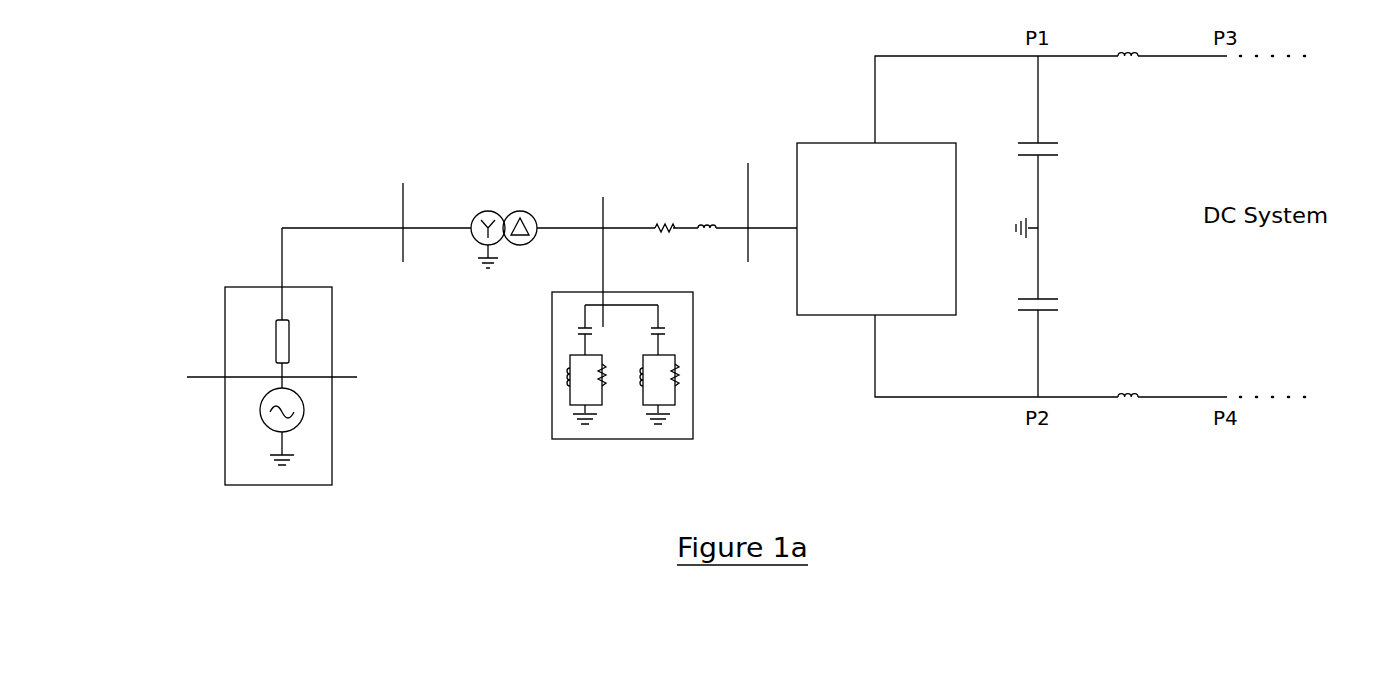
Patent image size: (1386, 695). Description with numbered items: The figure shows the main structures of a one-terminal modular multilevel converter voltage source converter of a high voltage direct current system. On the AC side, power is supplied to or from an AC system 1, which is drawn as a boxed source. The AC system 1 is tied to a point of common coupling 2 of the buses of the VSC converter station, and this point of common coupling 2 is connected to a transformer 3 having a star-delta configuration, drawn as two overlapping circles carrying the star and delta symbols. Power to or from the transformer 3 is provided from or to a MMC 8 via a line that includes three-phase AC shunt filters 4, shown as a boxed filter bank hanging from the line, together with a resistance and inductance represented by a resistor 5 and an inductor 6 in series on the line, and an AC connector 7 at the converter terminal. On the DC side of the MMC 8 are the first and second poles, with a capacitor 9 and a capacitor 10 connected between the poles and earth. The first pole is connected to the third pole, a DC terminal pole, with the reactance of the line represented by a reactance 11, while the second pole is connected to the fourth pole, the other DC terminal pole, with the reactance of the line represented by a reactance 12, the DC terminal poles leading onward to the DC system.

The AC system 1 is at (255, 277).
The point of common coupling 2 is at (402, 172).
The transformer 3 is at (503, 195).
The three-phase AC shunt filters 4 is at (557, 453).
The resistor 5 is at (664, 190).
The inductor 6 is at (700, 187).
The AC connector 7 is at (747, 165).
The MMC 8 is at (828, 134).
The capacitor 9 is at (1050, 160).
The capacitor 10 is at (1050, 290).
The reactance 11 is at (1130, 62).
The reactance 12 is at (1130, 392).